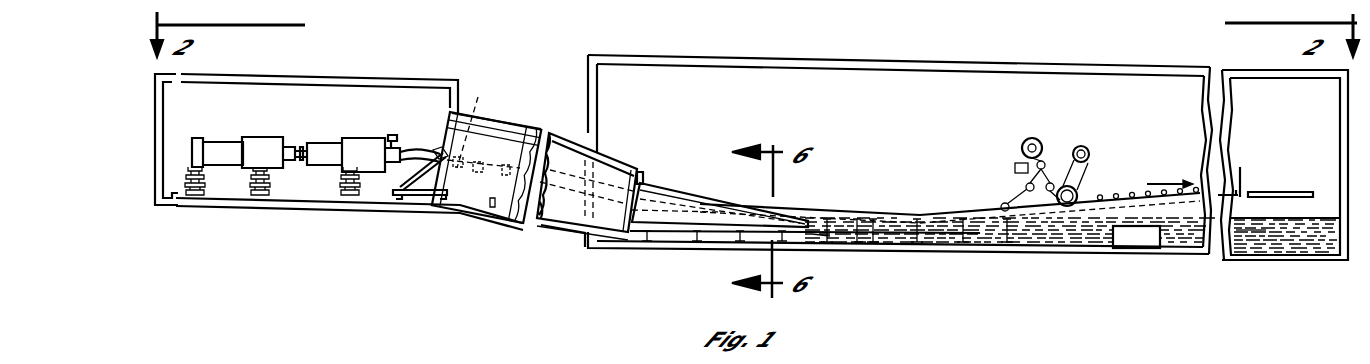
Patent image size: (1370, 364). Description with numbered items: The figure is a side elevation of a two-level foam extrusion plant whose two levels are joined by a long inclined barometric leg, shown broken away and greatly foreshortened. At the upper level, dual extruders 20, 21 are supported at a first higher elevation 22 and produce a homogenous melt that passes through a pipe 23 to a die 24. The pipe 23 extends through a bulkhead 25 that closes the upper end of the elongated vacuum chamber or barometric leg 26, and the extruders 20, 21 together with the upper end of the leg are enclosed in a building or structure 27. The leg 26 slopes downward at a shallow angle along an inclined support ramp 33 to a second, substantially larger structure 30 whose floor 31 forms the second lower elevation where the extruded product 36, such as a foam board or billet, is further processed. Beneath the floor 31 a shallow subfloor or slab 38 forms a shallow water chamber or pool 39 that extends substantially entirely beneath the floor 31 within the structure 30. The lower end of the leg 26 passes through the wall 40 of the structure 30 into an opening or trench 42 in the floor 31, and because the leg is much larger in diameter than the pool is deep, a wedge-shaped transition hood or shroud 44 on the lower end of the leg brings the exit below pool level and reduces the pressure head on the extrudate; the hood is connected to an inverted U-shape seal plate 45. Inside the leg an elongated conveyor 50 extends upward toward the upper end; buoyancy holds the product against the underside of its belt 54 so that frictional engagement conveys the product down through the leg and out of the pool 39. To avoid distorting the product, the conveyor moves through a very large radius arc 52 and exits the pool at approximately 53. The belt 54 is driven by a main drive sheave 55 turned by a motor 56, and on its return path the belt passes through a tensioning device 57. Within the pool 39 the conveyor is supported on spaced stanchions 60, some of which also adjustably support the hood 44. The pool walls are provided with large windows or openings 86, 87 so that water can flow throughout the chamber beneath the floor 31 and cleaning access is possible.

The extruder 20 is at (330, 145).
The extruder 21 is at (228, 145).
The first higher elevation 22 is at (312, 212).
The pipe 23 is at (430, 150).
The die 24 is at (486, 152).
The bulkhead 25 is at (443, 155).
The vacuum chamber or barometric leg 26 is at (498, 139).
The building or structure 27 is at (371, 74).
The second structure 30 is at (1155, 67).
The floor 31 is at (1320, 217).
The inclined support ramp 33 is at (542, 228).
The extruded product 36 is at (1271, 190).
The subfloor or slab 38 is at (1258, 258).
The water chamber or pool 39 is at (1313, 244).
The wall 40 is at (600, 145).
The opening or trench 42 is at (836, 207).
The transition hood or shroud 44 is at (684, 192).
The inverted U-shape seal plate 45 is at (645, 183).
The elongated conveyor 50 is at (613, 187).
The large radius arc 52 is at (858, 240).
The pool exit point 53 is at (922, 208).
The belt 54 is at (1010, 204).
The main drive sheave 55 is at (1080, 196).
The motor 56 is at (1086, 153).
The tensioning device 57 is at (1044, 164).
The stanchions 60 is at (740, 243).
The window or opening 86 is at (1118, 234).
The window or opening 87 is at (815, 243).